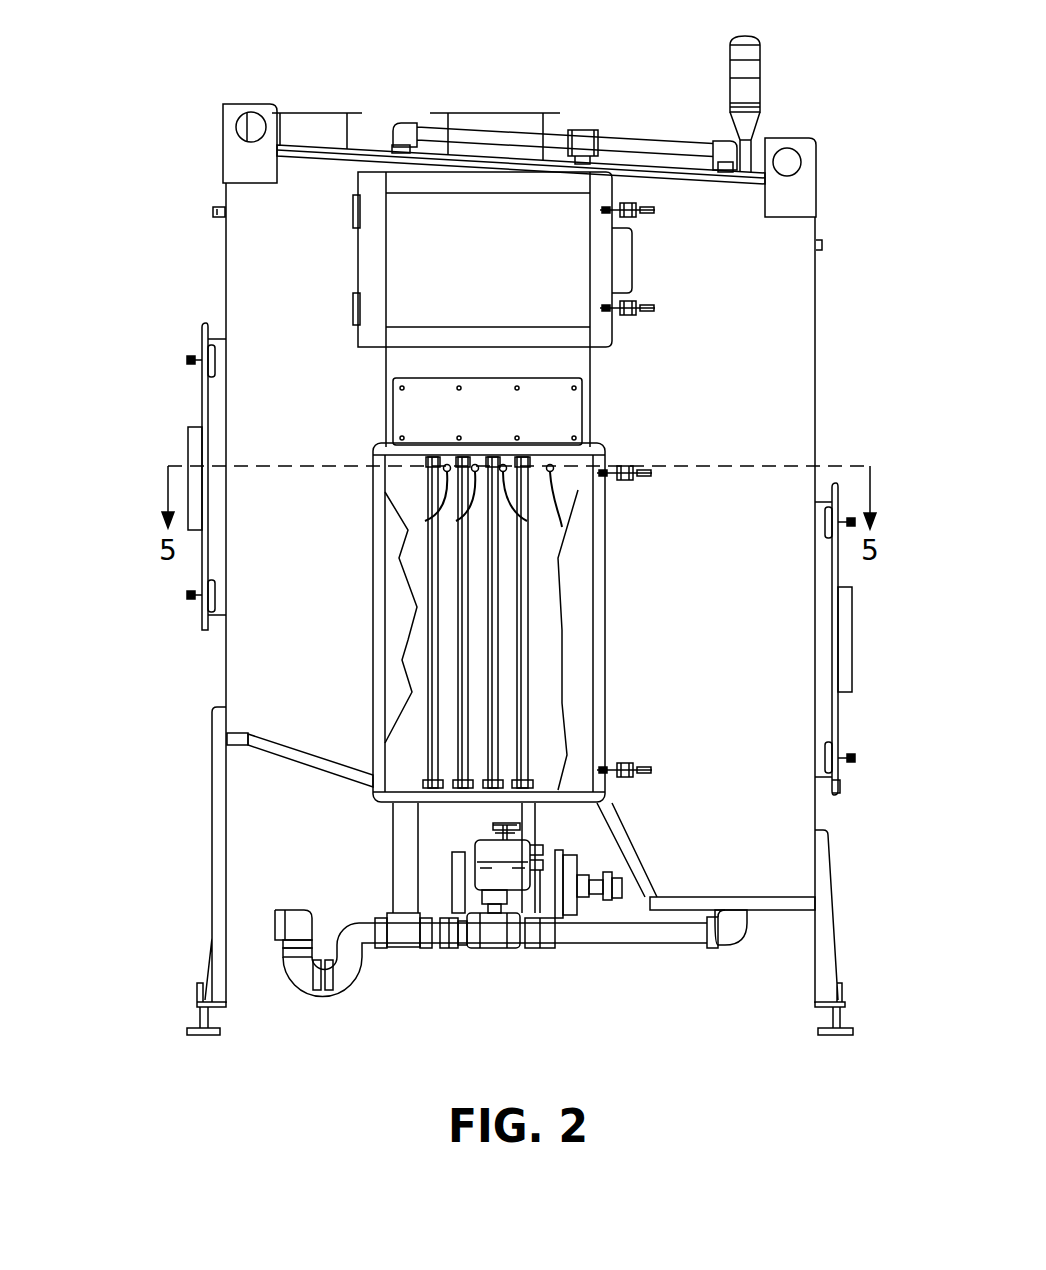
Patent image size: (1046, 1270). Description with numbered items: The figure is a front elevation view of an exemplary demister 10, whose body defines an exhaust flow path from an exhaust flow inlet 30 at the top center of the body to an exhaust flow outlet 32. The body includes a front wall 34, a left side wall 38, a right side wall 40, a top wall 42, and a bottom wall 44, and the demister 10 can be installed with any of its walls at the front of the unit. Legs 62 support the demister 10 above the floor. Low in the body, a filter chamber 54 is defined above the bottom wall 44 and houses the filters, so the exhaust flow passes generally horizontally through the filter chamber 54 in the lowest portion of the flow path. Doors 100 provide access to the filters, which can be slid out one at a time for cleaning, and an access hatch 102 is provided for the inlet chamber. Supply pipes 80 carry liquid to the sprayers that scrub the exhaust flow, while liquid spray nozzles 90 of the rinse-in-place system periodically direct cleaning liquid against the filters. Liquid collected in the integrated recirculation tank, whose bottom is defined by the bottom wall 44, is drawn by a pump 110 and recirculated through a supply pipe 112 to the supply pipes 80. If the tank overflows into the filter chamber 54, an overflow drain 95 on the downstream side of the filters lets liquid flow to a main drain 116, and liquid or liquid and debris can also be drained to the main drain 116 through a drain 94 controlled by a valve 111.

The demister 10 is at (180, 158).
The exhaust flow inlet 30 is at (482, 112).
The exhaust flow outlet 32 is at (305, 112).
The front wall 34 is at (790, 340).
The left side wall 38 is at (225, 660).
The right side wall 40 is at (815, 408).
The top wall 42 is at (373, 150).
The bottom wall 44 is at (305, 760).
The filter chamber 54 is at (390, 760).
The legs 62 is at (220, 975).
The supply pipes 80 is at (618, 145).
The liquid spray nozzles 90 is at (433, 520).
The drain 94 is at (723, 933).
The overflow drain 95 is at (407, 850).
The doors 100 is at (397, 662).
The access hatch 102 is at (438, 275).
The pump 110 is at (460, 876).
The valve 111 is at (492, 938).
The supply pipe 112 is at (613, 865).
The main drain 116 is at (297, 923).